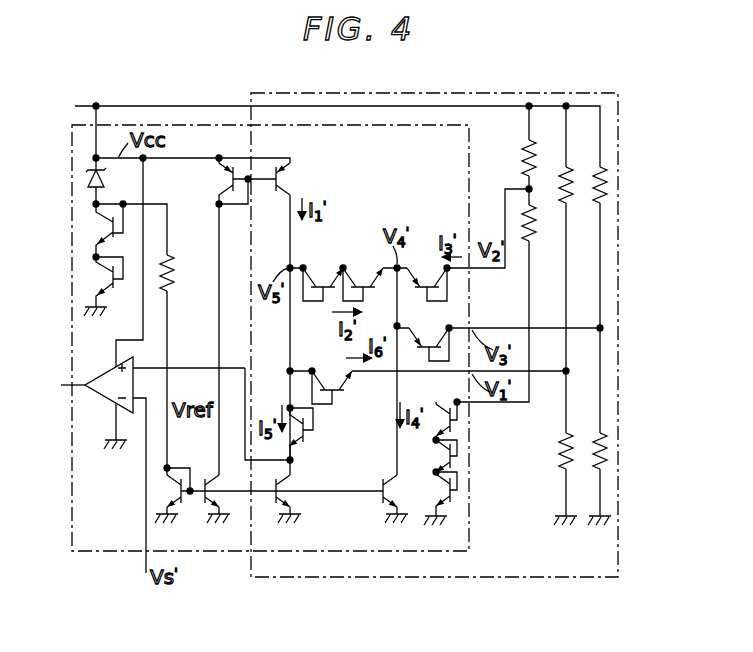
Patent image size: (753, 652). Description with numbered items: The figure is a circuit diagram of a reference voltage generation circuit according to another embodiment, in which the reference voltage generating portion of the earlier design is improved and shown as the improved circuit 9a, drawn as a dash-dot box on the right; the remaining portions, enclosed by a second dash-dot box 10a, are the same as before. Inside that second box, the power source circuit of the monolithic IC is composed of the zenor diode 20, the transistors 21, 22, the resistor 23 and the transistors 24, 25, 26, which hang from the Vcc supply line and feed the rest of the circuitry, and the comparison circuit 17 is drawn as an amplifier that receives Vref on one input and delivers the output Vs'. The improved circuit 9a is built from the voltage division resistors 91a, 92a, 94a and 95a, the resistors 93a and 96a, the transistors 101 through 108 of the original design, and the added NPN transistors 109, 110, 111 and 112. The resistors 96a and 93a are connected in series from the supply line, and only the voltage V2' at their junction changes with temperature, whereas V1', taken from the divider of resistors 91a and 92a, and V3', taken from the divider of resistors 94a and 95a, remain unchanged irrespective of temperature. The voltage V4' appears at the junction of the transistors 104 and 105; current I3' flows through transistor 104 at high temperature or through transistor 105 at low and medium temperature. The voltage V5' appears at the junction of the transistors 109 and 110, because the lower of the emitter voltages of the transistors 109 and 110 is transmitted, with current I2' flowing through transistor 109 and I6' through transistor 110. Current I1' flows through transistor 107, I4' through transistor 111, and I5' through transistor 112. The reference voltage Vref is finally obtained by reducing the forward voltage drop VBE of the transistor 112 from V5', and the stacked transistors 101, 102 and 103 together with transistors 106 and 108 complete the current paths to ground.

The improved circuit 9a is at (333, 578).
The reference voltage circuit 10a is at (213, 554).
The comparison circuit 17 is at (92, 392).
The zenor diode 20 is at (85, 177).
The transistor 21 is at (93, 234).
The transistor 22 is at (95, 282).
The resistor 23 is at (172, 263).
The transistor 24 is at (172, 470).
The transistor 25 is at (212, 488).
The transistor 26 is at (222, 182).
The transistor 101 is at (451, 422).
The transistor 102 is at (452, 462).
The transistor 103 is at (455, 500).
The transistor 104 is at (432, 335).
The transistor 105 is at (447, 283).
The transistor 106 is at (363, 265).
The transistor 107 is at (292, 181).
The transistor 108 is at (289, 486).
The NPN transistor 109 is at (325, 264).
The NPN transistor 110 is at (331, 380).
The NPN transistor 111 is at (386, 475).
The NPN transistor 112 is at (305, 437).
The voltage division resistor 91a is at (572, 205).
The voltage division resistor 92a is at (557, 440).
The resistor 93a is at (527, 228).
The voltage division resistor 94a is at (604, 185).
The voltage division resistor 95a is at (605, 450).
The resistor 96a is at (524, 168).